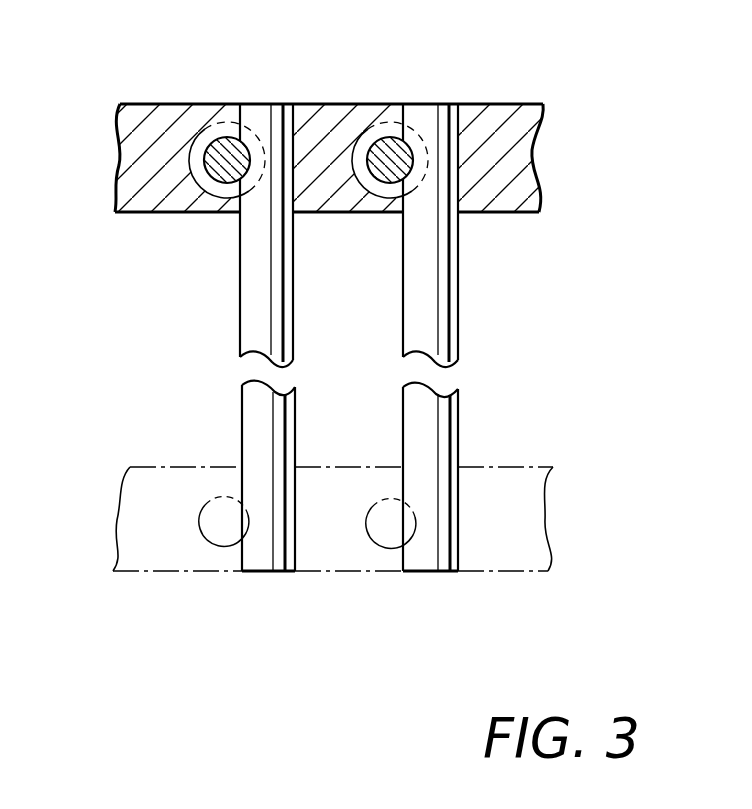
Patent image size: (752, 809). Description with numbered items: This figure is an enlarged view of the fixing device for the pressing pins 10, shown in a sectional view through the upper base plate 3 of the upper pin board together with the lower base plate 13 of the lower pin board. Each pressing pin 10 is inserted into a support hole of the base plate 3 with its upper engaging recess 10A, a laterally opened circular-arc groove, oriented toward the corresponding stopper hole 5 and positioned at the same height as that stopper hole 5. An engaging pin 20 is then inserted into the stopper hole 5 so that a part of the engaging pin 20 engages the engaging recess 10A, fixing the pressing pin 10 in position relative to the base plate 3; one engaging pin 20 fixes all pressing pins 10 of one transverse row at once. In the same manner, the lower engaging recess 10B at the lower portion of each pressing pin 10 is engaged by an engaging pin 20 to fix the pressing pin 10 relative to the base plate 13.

The base plate 3 is at (518, 152).
The pressing pin 10 is at (338, 339).
The engaging recess 10A is at (244, 157).
The engaging recess 10B is at (244, 548).
The engaging pin 20 is at (210, 153).
The base plate 13 is at (530, 522).
The stopper hole 5 is at (217, 527).